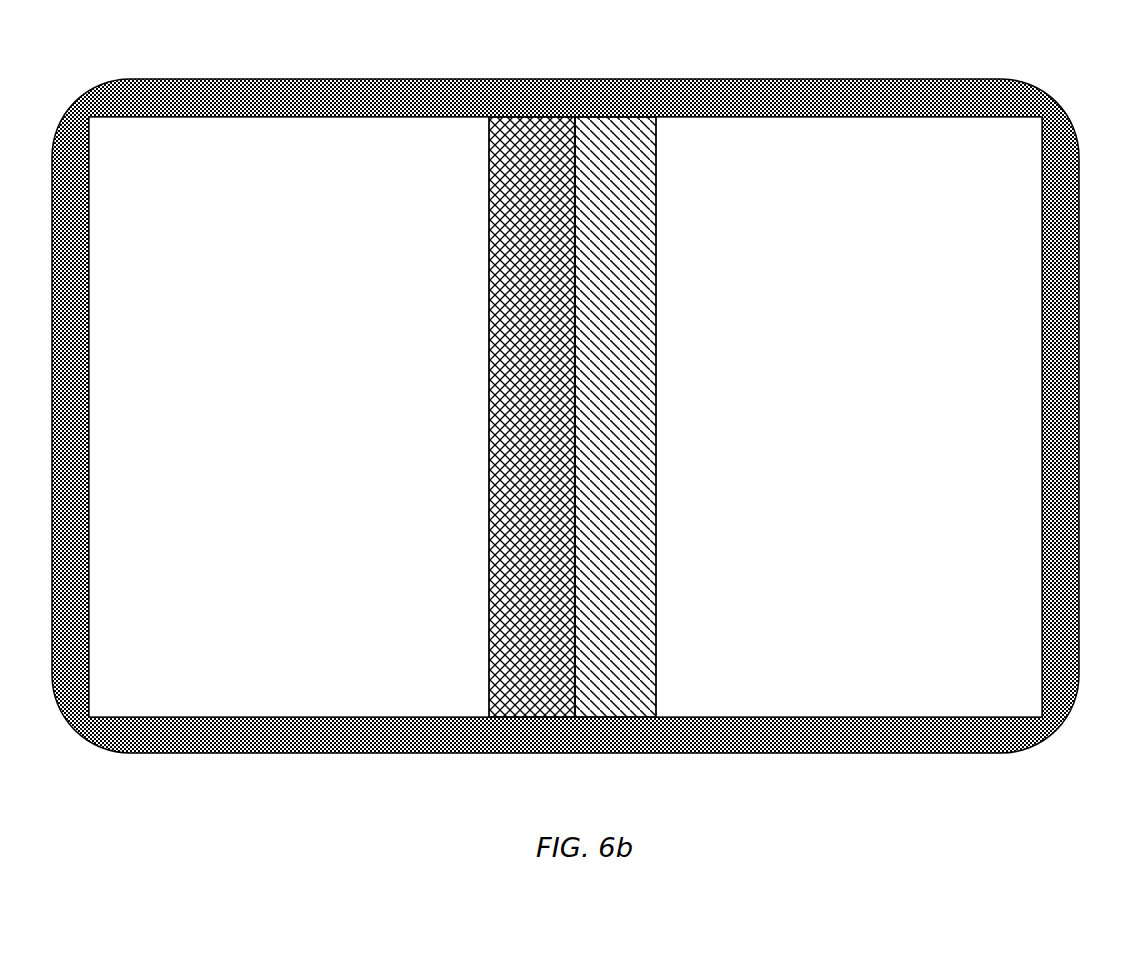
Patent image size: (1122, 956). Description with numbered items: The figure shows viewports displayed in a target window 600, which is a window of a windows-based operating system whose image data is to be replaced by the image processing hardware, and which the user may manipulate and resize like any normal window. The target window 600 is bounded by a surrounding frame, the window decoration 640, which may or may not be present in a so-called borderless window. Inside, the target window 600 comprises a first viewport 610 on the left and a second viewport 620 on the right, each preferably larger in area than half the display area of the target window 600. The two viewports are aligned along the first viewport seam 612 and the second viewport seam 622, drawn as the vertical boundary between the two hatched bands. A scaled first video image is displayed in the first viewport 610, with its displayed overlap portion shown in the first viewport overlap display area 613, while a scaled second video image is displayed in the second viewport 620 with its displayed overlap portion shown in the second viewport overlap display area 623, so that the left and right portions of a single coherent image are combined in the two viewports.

The target window 600 is at (565, 431).
The first viewport 610 is at (289, 417).
The first viewport seam 612 is at (575, 190).
The first viewport overlap display area 613 is at (489, 570).
The second viewport 620 is at (849, 417).
The second viewport seam 622 is at (672, 417).
The second viewport overlap display area 623 is at (633, 567).
The Window Decoration 640 is at (723, 740).